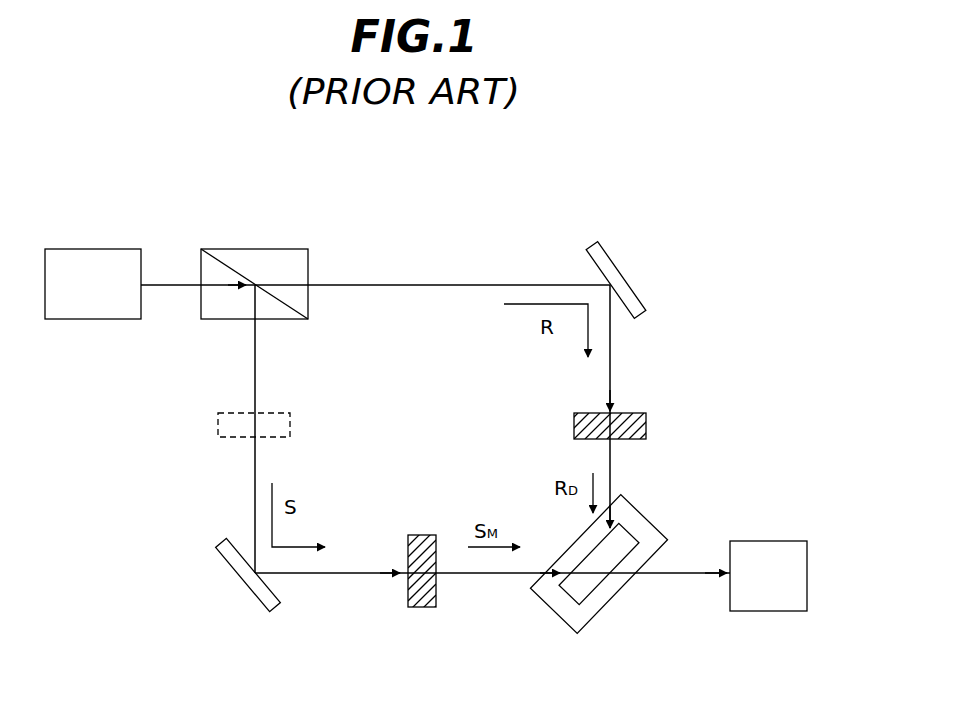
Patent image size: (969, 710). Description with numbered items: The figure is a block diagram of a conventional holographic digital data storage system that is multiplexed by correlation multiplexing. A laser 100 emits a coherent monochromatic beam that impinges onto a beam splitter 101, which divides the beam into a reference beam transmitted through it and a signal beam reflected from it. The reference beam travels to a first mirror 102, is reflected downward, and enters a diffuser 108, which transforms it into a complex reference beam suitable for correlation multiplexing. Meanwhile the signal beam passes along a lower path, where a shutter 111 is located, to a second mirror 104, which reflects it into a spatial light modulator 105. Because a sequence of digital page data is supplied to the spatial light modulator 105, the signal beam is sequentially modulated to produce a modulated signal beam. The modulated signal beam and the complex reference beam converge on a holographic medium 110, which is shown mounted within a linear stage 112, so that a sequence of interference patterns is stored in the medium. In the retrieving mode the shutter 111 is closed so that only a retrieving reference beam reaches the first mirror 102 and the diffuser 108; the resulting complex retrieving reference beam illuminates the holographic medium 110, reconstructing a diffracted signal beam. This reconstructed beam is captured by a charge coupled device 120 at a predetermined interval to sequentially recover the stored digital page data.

The laser 100 is at (126, 249).
The beam splitter 101 is at (293, 249).
The first mirror 102 is at (644, 315).
The second mirror 104 is at (277, 610).
The spatial light modulator 105 is at (428, 607).
The diffuser 108 is at (646, 425).
The holographic medium 110 is at (598, 588).
The shutter 111 is at (290, 420).
The linear stage 112 is at (647, 517).
The charge coupled device 120 is at (790, 611).